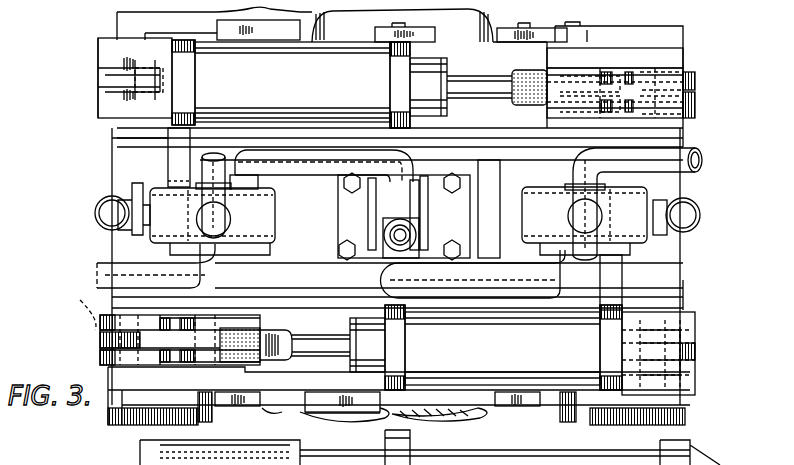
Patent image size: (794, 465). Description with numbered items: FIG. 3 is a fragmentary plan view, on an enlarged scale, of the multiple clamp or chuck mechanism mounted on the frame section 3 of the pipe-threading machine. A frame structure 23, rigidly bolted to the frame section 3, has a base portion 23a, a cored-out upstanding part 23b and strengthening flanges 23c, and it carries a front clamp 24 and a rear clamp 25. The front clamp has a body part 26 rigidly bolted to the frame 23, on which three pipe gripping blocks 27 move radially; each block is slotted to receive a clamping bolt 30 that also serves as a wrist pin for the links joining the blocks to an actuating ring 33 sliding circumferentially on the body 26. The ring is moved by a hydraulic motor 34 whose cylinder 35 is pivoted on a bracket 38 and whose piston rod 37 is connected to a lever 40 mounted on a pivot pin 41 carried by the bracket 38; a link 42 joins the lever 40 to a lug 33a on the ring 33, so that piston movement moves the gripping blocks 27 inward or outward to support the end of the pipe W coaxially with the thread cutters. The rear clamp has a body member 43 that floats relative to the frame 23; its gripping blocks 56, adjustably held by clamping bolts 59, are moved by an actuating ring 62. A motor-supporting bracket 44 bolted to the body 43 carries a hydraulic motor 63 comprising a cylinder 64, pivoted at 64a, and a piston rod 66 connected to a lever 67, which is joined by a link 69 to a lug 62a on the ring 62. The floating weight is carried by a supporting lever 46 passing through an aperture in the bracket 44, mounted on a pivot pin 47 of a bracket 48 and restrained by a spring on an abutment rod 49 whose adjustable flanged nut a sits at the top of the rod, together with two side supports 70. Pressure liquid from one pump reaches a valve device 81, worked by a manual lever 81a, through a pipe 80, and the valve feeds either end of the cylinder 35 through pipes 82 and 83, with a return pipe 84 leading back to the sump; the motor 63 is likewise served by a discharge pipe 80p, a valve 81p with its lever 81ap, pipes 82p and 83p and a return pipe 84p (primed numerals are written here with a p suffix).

The frame section 3 is at (117, 19).
The clamping bolts 59 is at (288, 14).
The gripping blocks 56 is at (217, 30).
The motor-supporting bracket 44 is at (160, 48).
The rear clamp or chuck 25 is at (80, 57).
The pivotal support 64a is at (128, 96).
The cylinder 64 is at (291, 84).
The hydraulic actuating motor 63 is at (455, 73).
The piston rod 66 is at (470, 93).
The actuating ring 62 is at (672, 52).
The lug 62a is at (690, 71).
The link 69 is at (695, 81).
The lever 67 is at (695, 101).
The frame structure 23 is at (112, 163).
The pivot pin 47 is at (430, 161).
The pipe 82p is at (175, 142).
The supports 70 is at (118, 180).
The base portion 23a is at (702, 434).
The strengthening flanges 23c is at (720, 295).
The valve 81p is at (160, 240).
The manual lever 81ap is at (96, 214).
The return pipe 84p is at (215, 200).
The pipe 83p is at (290, 165).
The cored-out upstanding part 23b is at (378, 216).
The supporting lever 46 is at (410, 186).
The bracket 48 is at (425, 202).
The abutment rod 49 is at (395, 222).
The bolt head a is at (392, 227).
The body member 43 is at (500, 161).
The pipe 80 is at (690, 150).
The return pipe 84 is at (580, 216).
The valve device 81 is at (650, 202).
The manual lever 81a is at (700, 215).
The pipe 82 is at (622, 288).
The pipe 83 is at (488, 264).
The discharge pipe 80p is at (100, 274).
The body part 26 is at (305, 290).
The pivot pin 41 is at (82, 300).
The front clamp or chuck 24 is at (100, 323).
The lever 40 is at (100, 344).
The link 42 is at (100, 355).
The piston rod 37 is at (300, 335).
The hydraulic motor 34 is at (342, 360).
The cylinder 35 is at (503, 347).
The bracket 38 is at (695, 380).
The lug 33a is at (117, 369).
The actuating ring 33 is at (205, 402).
The pipe gripping blocks 27 is at (250, 404).
The clamping bolt 30 is at (282, 416).
The workpiece W is at (445, 420).